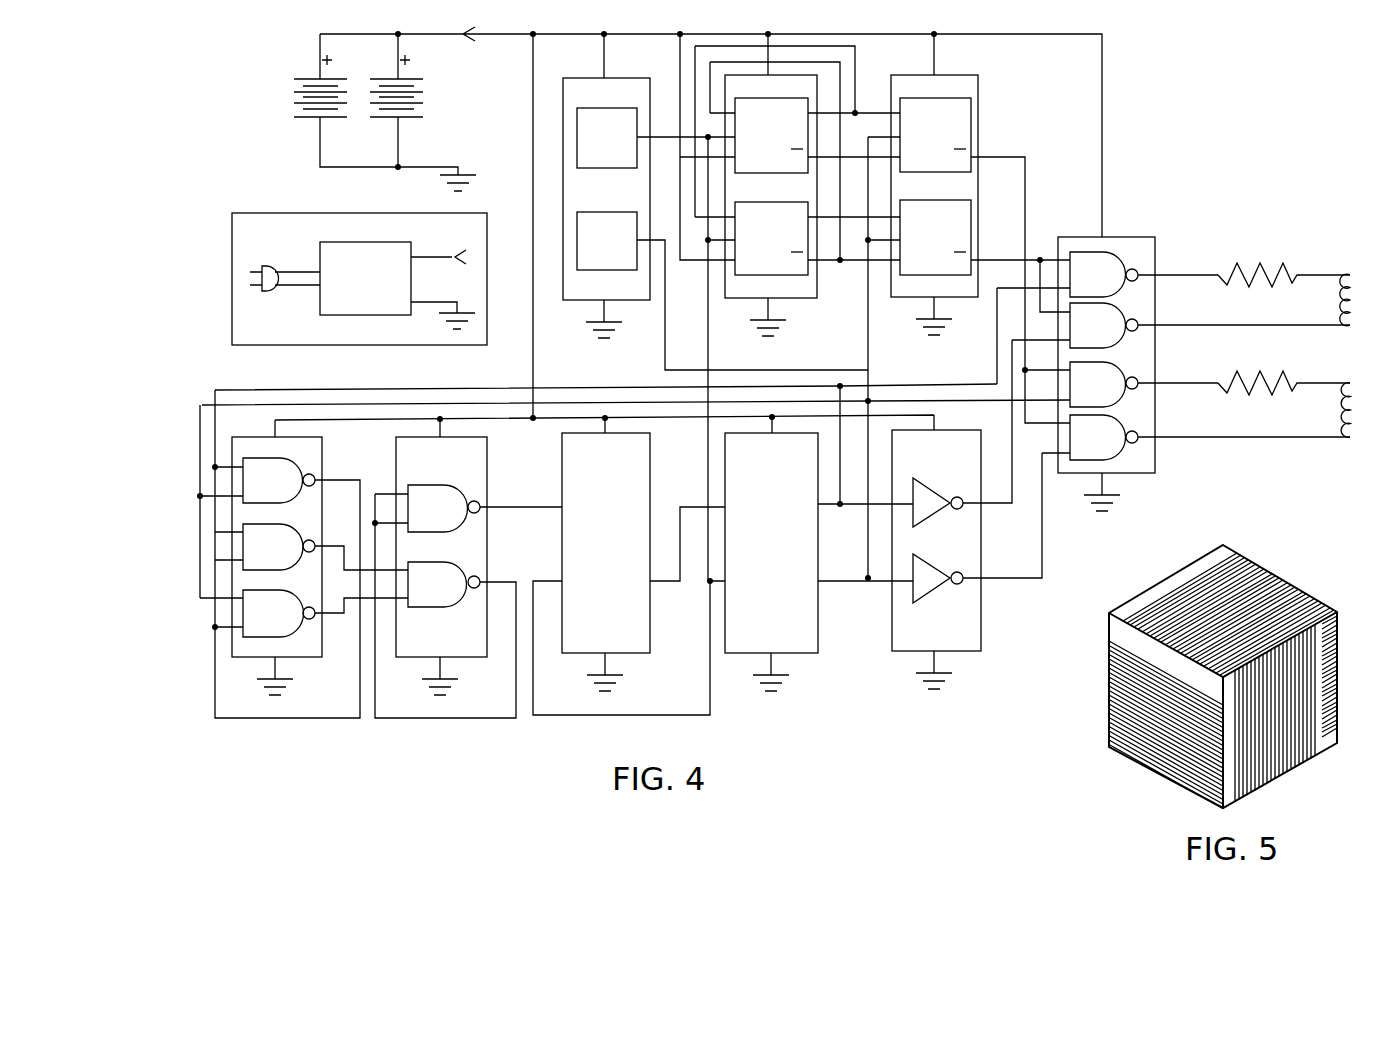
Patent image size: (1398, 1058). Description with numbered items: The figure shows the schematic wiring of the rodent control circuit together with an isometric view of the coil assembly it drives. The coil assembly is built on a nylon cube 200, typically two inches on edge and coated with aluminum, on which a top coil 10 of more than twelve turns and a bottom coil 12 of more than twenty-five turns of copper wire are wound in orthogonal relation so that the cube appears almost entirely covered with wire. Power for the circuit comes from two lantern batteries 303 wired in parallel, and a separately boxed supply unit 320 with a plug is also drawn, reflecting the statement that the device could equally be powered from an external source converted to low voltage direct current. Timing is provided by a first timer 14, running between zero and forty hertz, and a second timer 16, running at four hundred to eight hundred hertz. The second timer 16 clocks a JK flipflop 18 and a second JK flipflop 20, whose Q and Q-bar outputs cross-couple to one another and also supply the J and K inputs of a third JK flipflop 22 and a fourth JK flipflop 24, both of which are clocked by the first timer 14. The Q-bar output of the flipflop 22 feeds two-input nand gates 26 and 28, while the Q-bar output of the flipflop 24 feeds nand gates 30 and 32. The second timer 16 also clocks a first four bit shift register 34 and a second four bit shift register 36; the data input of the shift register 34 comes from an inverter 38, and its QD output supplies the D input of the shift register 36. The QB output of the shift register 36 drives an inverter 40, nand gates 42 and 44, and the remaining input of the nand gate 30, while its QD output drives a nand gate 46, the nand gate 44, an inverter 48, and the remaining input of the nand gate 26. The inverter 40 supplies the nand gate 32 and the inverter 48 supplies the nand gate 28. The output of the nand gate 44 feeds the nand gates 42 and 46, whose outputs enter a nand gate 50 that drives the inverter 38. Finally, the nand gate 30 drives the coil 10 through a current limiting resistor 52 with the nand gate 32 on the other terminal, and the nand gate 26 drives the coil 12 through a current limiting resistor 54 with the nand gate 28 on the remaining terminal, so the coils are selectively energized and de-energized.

In FIG. 4, the top coil 10 is at (1365, 300).
In FIG. 5, the top coil 10 is at (1266, 781).
In FIG. 4, the bottom coil 12 is at (1365, 410).
In FIG. 5, the bottom coil 12 is at (1108, 712).
In FIG. 4, the first timer 14 is at (607, 241).
In FIG. 4, the second timer 16 is at (607, 138).
In FIG. 4, the JK flipflop 18 is at (771, 135).
In FIG. 4, the second JK flipflop 20 is at (771, 238).
In FIG. 4, the third JK flipflop 22 is at (935, 135).
In FIG. 4, the fourth JK flipflop 24 is at (935, 237).
In FIG. 4, the two-input nand gate 26 is at (1104, 384).
In FIG. 4, the two-input nand gate 28 is at (1104, 437).
In FIG. 4, the two-input nand gate 30 is at (1104, 274).
In FIG. 4, the two-input nand gate 32 is at (1104, 325).
In FIG. 4, the first four bit shift register 34 is at (606, 543).
In FIG. 4, the second four bit shift register 36 is at (771, 543).
In FIG. 4, the inverter 38 is at (444, 508).
In FIG. 4, the inverter 40 is at (938, 502).
In FIG. 4, the two-input nand gate 42 is at (279, 547).
In FIG. 4, the two-input nand gate 44 is at (279, 480).
In FIG. 4, the two-input nand gate 46 is at (279, 613).
In FIG. 4, the inverter 48 is at (938, 578).
In FIG. 4, the two-input nand gate 50 is at (444, 584).
In FIG. 4, the current limiting resistor 52 is at (1284, 262).
In FIG. 4, the current limiting resistor 54 is at (1284, 371).
In FIG. 5, the nylon cube 200 is at (1202, 673).
In FIG. 4, the lantern batteries 303 is at (371, 112).
In FIG. 4, the power supply 320 is at (362, 285).